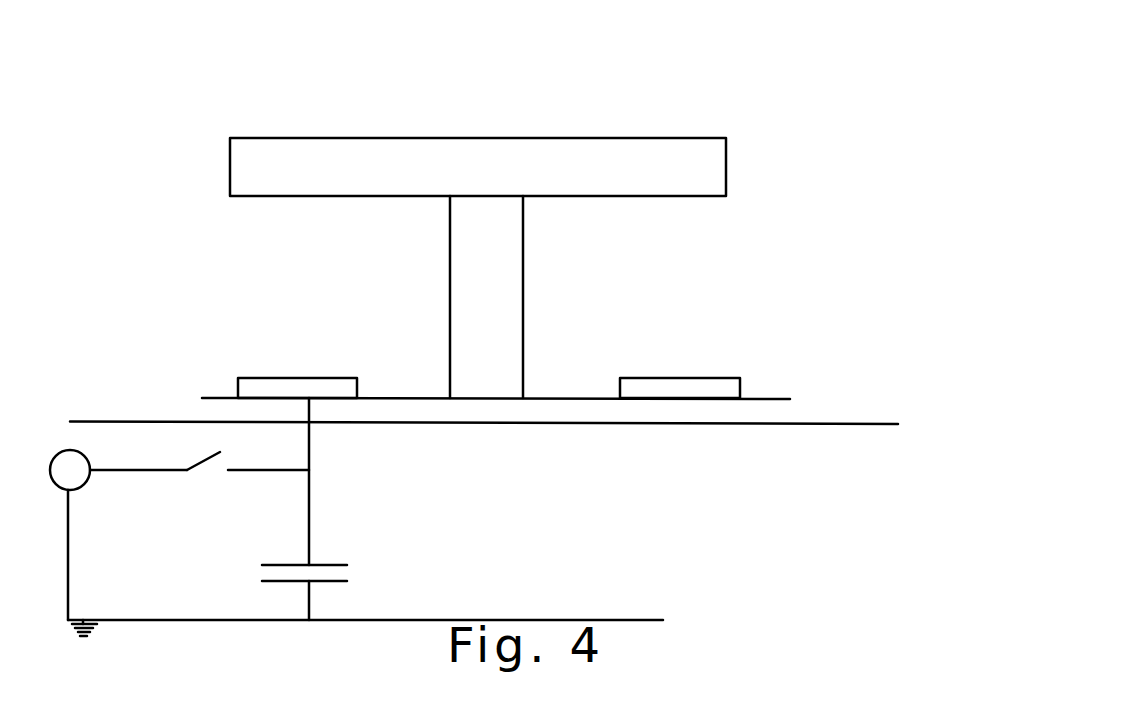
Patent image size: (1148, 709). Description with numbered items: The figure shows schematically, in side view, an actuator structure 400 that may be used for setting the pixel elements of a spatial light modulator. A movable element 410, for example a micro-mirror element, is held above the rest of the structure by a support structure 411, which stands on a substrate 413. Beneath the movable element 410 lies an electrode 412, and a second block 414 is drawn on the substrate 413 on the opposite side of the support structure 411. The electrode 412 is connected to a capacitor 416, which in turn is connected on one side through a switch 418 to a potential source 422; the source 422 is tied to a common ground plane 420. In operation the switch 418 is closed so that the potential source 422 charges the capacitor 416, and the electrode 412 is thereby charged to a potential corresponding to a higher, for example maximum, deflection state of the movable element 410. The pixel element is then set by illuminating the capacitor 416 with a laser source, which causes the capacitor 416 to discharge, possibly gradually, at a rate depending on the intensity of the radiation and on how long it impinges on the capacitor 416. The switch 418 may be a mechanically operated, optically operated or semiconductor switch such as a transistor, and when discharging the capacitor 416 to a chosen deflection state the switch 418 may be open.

The actuator structure 400 is at (877, 162).
The movable element 410 is at (430, 155).
The support structure 411 is at (497, 303).
The electrode 412 is at (317, 383).
The substrate 413 is at (422, 397).
The right electrode block 414 is at (690, 394).
The capacitor 416 is at (330, 576).
The switch 418 is at (203, 463).
The common ground plane 420 is at (153, 618).
The potential source 422 is at (75, 473).